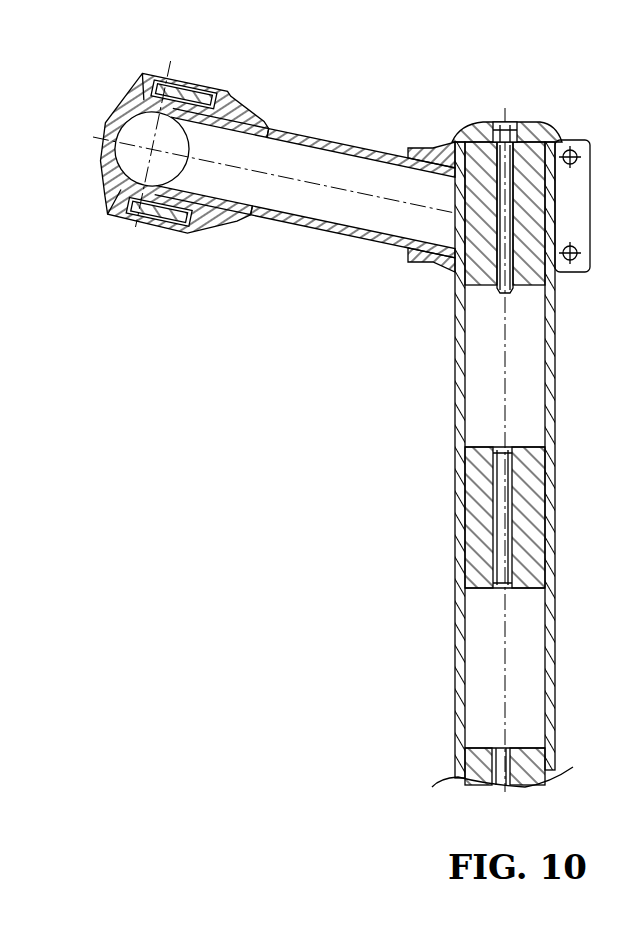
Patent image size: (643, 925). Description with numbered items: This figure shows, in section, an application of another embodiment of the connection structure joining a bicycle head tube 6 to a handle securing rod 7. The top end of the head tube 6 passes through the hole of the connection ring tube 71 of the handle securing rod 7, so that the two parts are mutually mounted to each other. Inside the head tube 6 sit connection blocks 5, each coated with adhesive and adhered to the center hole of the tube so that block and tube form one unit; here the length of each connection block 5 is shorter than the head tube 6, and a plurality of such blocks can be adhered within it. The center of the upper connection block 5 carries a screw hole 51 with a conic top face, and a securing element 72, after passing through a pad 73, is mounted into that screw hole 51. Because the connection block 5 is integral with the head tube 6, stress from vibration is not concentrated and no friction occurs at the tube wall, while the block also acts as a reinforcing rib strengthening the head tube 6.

The connection block 5 is at (548, 282).
The head tube 6 is at (461, 397).
The handle securing rod 7 is at (313, 128).
The screw hole 51 is at (517, 520).
The connection ring tube 71 is at (428, 152).
The securing element 72 is at (485, 165).
The pad 73 is at (540, 130).